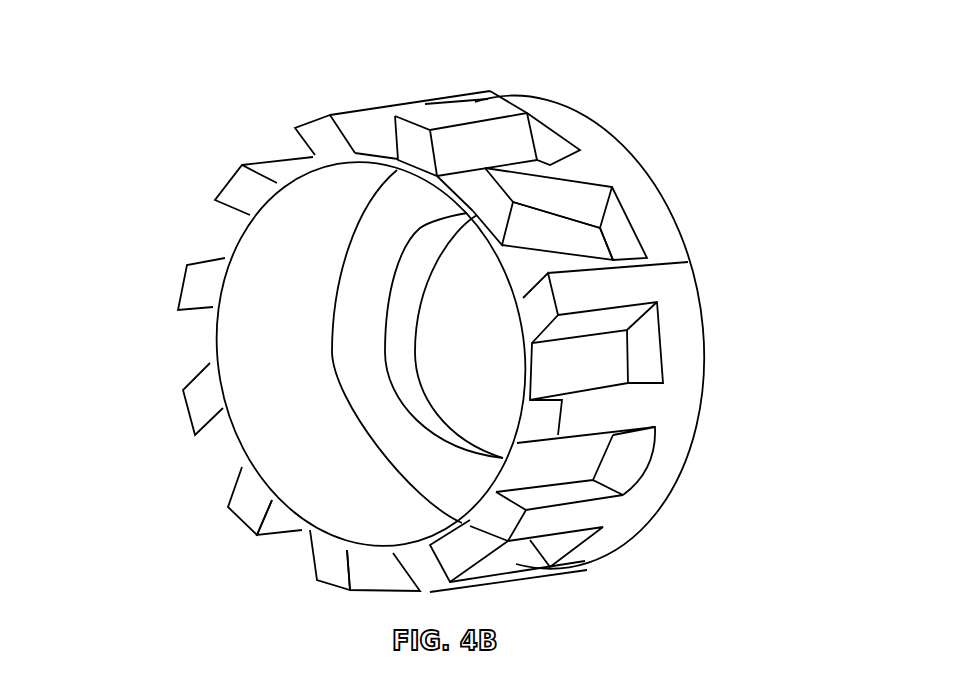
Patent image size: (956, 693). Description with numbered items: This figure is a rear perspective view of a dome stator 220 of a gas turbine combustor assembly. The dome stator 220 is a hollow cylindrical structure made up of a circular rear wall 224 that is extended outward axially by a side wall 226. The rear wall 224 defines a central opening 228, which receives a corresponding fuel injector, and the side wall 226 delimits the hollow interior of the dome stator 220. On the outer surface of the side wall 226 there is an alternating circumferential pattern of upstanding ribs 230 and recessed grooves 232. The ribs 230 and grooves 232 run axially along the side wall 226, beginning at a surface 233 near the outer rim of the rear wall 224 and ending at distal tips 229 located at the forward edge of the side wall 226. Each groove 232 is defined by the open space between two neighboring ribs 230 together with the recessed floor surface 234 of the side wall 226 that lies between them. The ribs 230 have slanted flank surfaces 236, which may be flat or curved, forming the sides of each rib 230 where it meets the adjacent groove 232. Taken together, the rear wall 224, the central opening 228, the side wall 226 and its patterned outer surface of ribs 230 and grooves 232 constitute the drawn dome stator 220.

The dome stator 220 is at (451, 310).
The rear wall 224 is at (393, 270).
The side wall 226 is at (313, 432).
The central opening 228 is at (433, 397).
The distal tips 229 is at (478, 217).
The upstanding ribs 230 is at (633, 196).
The recessed grooves 232 is at (500, 142).
The surface 233 is at (620, 233).
The recessed floor surface 234 is at (593, 247).
The slanted flank surfaces 236 is at (600, 204).